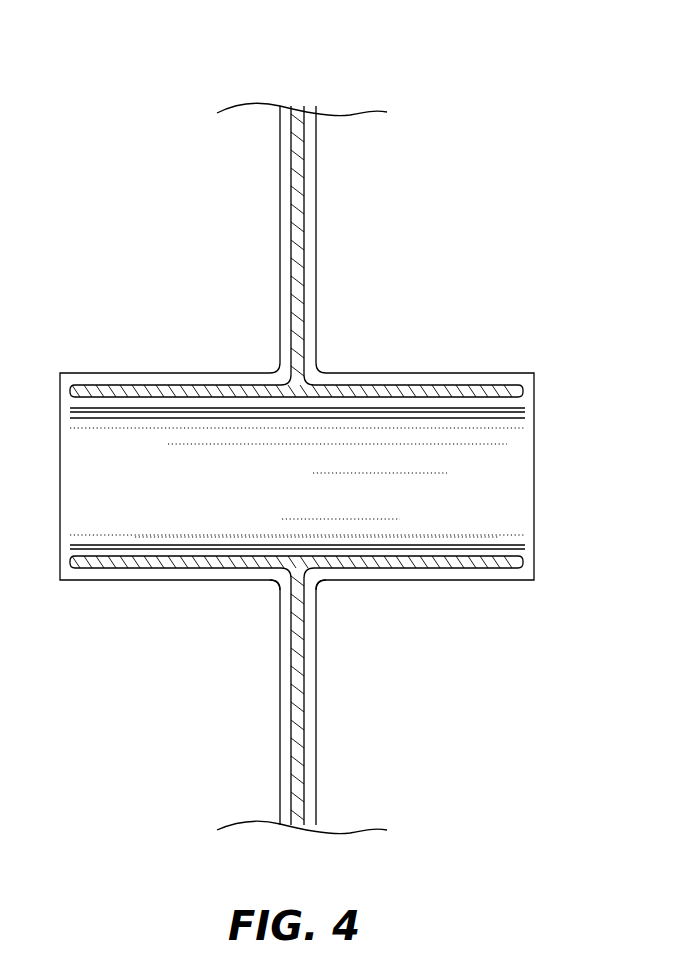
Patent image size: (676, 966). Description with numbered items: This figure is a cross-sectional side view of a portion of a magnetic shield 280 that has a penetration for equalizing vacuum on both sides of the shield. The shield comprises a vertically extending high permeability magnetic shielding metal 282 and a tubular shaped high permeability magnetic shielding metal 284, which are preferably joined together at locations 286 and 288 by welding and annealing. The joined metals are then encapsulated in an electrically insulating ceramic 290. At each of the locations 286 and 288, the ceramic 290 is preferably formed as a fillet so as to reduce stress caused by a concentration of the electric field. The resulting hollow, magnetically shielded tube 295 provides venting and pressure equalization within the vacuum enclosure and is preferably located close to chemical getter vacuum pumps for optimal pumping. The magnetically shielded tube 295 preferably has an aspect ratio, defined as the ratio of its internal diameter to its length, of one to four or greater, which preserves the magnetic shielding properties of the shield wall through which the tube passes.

The magnetic shield 280 is at (127, 96).
The vertically extending high permeability magnetic shielding metal 282 is at (279, 266).
The tubular shaped high permeability magnetic shielding metal 284 is at (232, 388).
The location 286 is at (276, 582).
The location 288 is at (318, 582).
The electrically insulating ceramic 290 is at (456, 372).
The magnetically shielded tube 295 is at (128, 351).